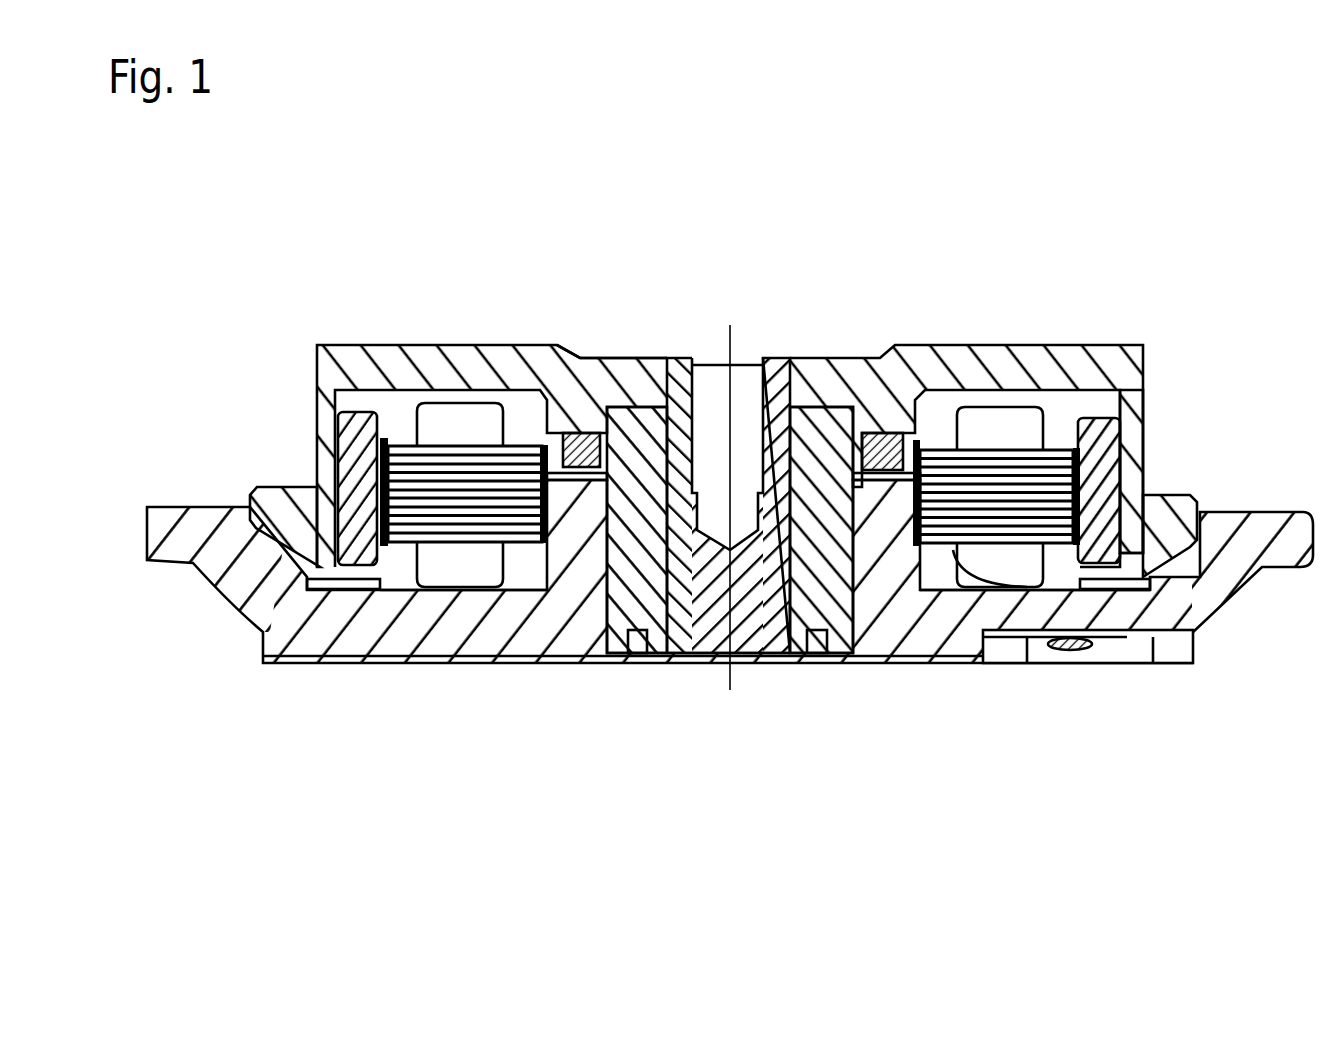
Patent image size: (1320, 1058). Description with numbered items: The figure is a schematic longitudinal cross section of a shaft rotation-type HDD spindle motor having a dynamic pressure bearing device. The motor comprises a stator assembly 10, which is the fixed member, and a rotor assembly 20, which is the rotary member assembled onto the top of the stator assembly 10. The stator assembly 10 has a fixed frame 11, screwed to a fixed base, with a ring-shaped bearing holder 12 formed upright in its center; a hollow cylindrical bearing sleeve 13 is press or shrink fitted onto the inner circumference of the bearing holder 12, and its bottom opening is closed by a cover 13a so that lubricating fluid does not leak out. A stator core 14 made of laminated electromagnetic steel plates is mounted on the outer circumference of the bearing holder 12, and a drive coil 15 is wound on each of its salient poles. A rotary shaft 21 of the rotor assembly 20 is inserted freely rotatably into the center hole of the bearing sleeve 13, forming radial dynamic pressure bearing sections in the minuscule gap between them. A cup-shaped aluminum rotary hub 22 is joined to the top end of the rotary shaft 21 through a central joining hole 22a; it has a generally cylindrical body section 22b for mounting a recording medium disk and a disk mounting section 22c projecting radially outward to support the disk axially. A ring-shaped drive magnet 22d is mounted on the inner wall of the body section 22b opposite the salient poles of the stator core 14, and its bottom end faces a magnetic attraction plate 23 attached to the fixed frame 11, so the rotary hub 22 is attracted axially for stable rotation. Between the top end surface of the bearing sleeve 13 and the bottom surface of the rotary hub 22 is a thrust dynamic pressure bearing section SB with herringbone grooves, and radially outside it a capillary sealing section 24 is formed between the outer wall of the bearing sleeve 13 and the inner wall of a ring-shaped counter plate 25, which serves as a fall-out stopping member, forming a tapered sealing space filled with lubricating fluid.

The stator assembly 10 is at (1045, 722).
The fixed frame 11 is at (958, 645).
The bearing holder 12 is at (540, 668).
The bearing sleeve 13 is at (858, 490).
The cover 13a is at (693, 668).
The stator core 14 is at (400, 408).
The drive coil 15 is at (462, 420).
The rotor assembly 20 is at (1103, 322).
The rotary shaft 21 is at (705, 355).
The rotary hub 22 is at (983, 347).
The joining hole 22a is at (773, 357).
The body section 22b is at (1150, 410).
The disk mounting section 22c is at (1178, 495).
The ring-shaped drive magnet 22d is at (1097, 550).
The magnetic attraction plate 23 is at (1108, 575).
The capillary sealing section 24 is at (880, 417).
The counter plate 25 is at (880, 490).
The thrust dynamic pressure bearing section SB is at (637, 495).